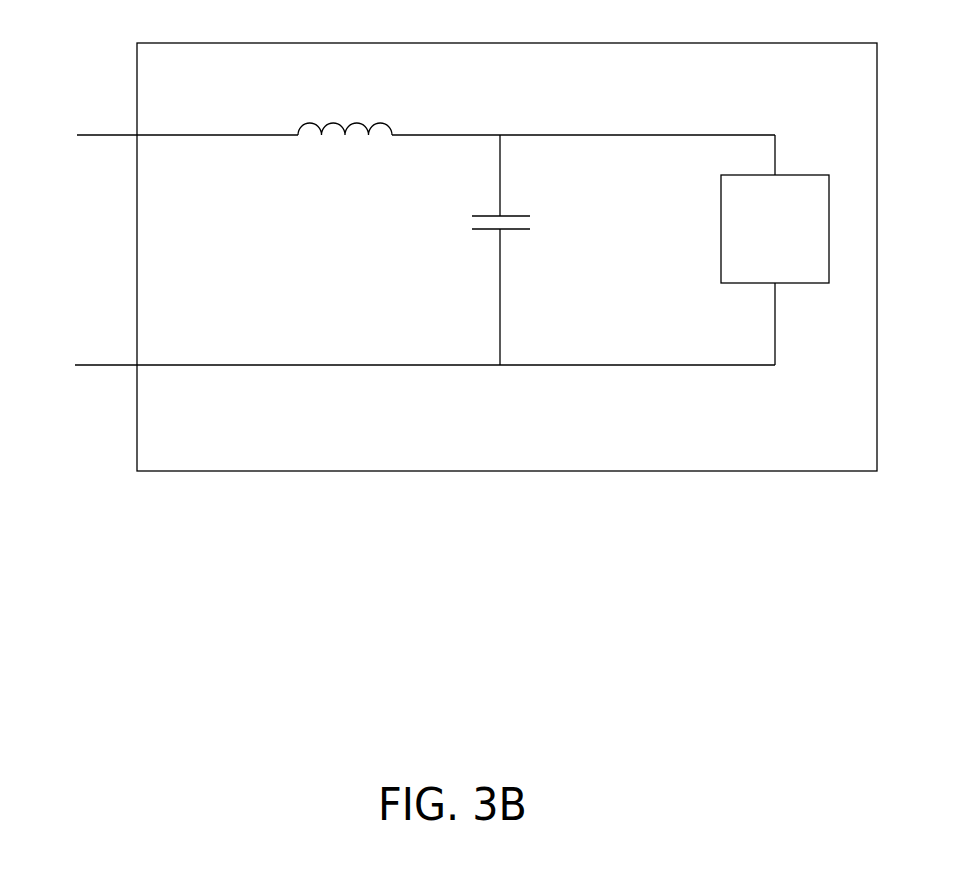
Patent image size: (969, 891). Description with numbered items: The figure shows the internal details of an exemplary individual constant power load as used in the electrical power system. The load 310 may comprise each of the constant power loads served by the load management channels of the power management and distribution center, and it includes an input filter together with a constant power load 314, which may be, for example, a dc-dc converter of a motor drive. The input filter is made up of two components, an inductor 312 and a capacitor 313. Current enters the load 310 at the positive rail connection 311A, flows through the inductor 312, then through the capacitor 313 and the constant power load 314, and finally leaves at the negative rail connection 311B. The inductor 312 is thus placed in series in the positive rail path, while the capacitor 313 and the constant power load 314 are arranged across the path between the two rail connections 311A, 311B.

The load 310 is at (206, 78).
The positive rail connection 311A is at (72, 146).
The negative rail connection 311B is at (65, 370).
The inductor 312 is at (351, 137).
The capacitor 313 is at (532, 222).
The constant power load 314 is at (759, 250).